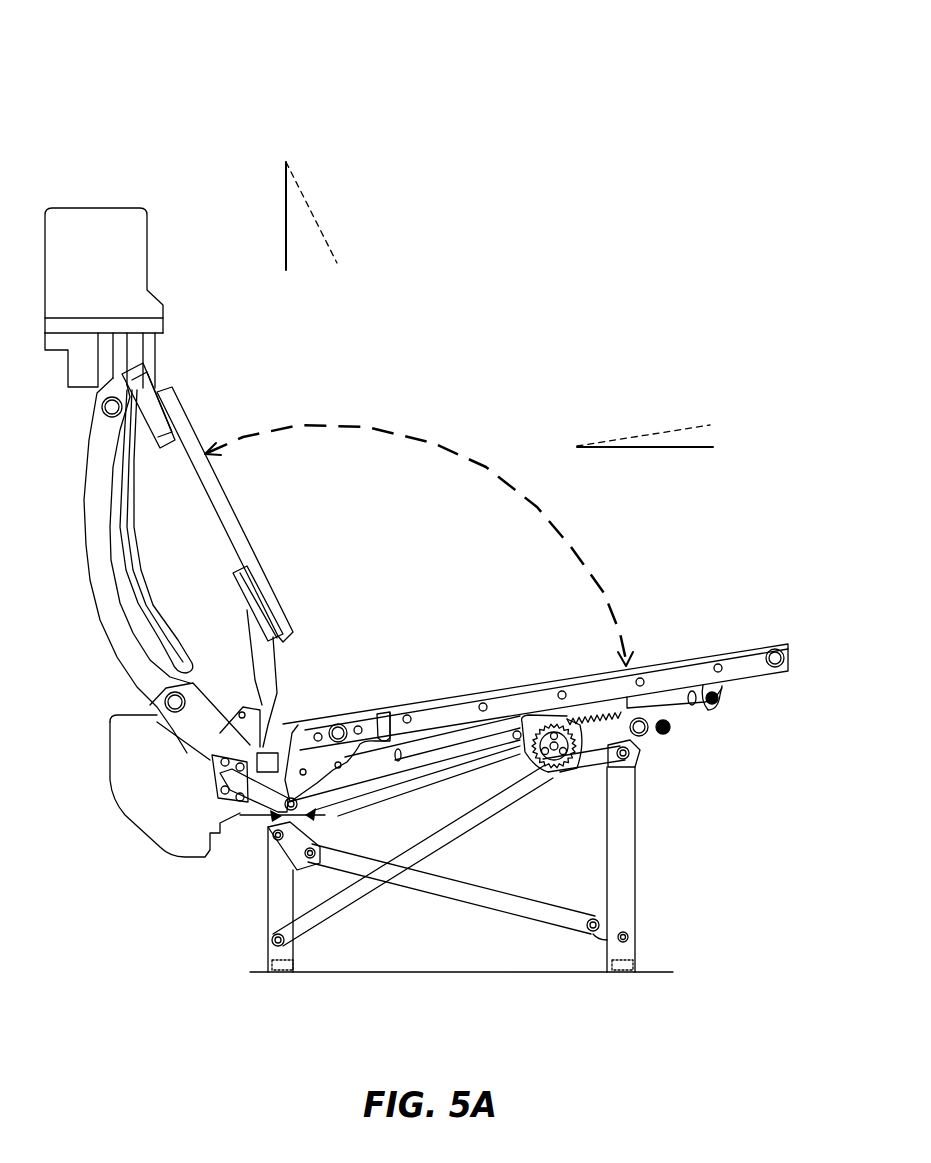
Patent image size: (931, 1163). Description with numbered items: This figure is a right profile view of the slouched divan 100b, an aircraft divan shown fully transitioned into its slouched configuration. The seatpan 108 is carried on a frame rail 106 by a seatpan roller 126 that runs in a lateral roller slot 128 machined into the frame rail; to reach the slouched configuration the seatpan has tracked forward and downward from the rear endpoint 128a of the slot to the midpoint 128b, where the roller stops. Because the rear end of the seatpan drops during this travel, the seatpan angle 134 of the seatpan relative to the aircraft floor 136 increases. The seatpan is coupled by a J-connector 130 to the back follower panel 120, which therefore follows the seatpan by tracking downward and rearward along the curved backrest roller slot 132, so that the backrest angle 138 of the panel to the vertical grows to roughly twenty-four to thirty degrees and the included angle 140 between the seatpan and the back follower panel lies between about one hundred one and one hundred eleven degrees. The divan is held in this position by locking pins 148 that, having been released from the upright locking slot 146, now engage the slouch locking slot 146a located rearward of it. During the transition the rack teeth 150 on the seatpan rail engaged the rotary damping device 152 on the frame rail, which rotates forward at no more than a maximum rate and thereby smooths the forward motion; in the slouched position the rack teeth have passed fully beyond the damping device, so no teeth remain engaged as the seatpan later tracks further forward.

The slouched divan 100b is at (86, 82).
The frame rail 106 is at (443, 767).
The seatpan 108 is at (393, 705).
The back follower panel 120 is at (245, 542).
The seatpan roller 126 is at (273, 817).
The lateral roller slot 128 is at (367, 780).
The rear endpoint 128a is at (217, 780).
The midpoint 128b is at (303, 807).
The J-connector 130 is at (260, 683).
The backrest roller slot 132 is at (120, 517).
The seatpan angle 134 is at (693, 438).
The aircraft floor 136 is at (410, 972).
The backrest angle 138 is at (303, 257).
The included angle 140 is at (450, 450).
The upright locking slot 146 is at (688, 702).
The slouch locking slot 146a is at (633, 747).
The locking pin 148 is at (625, 706).
The rack teeth 150 is at (600, 712).
The rotary damping device 152 is at (553, 767).